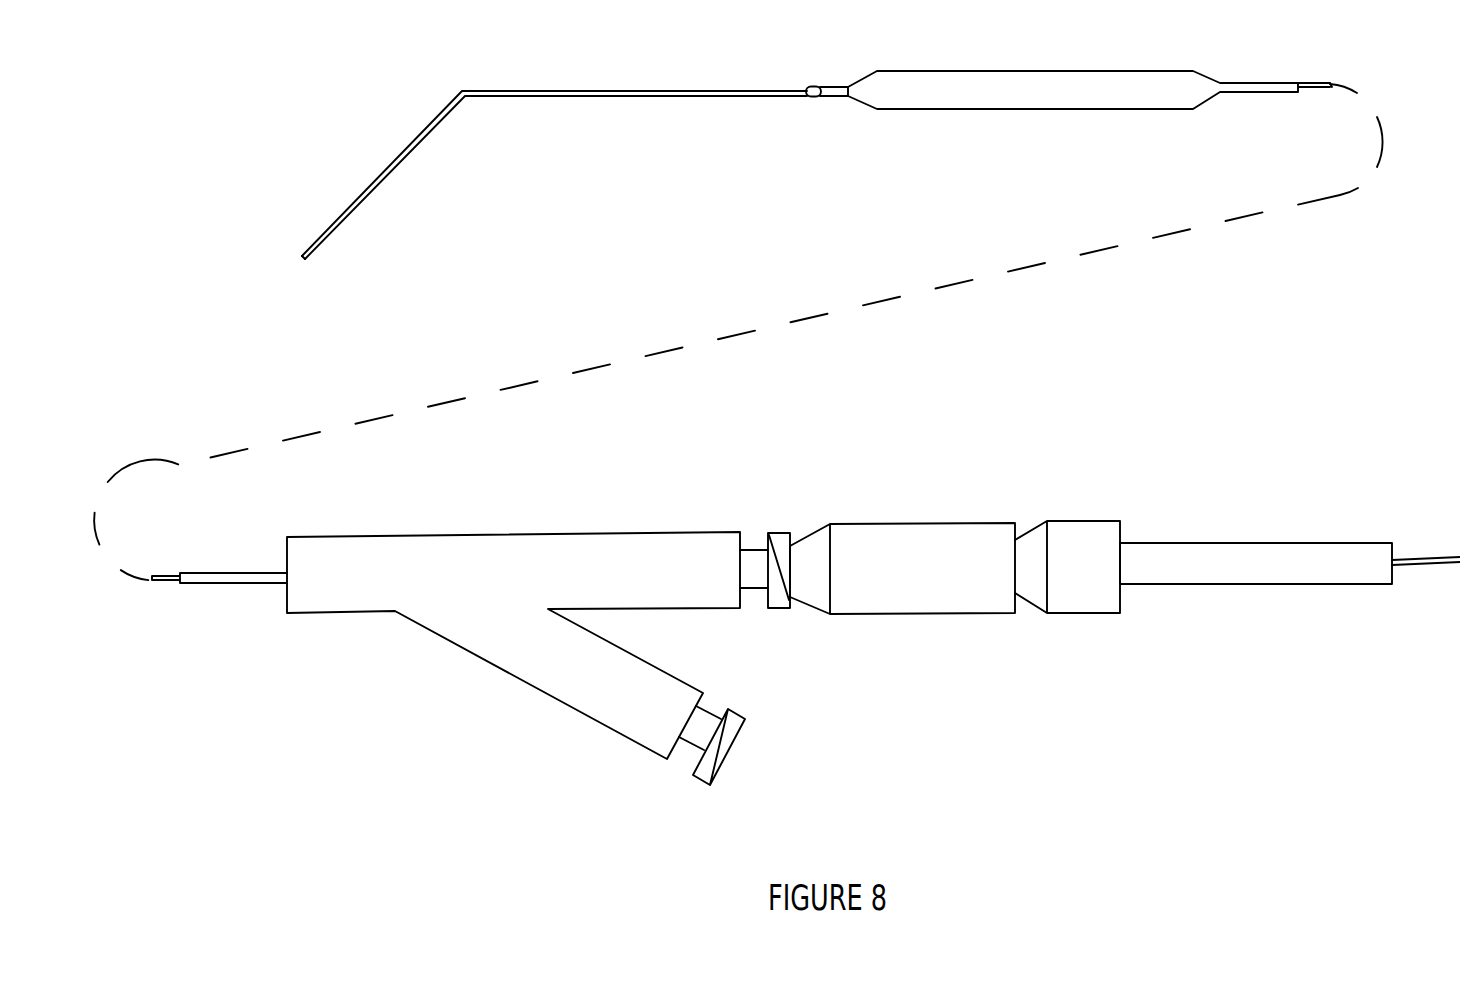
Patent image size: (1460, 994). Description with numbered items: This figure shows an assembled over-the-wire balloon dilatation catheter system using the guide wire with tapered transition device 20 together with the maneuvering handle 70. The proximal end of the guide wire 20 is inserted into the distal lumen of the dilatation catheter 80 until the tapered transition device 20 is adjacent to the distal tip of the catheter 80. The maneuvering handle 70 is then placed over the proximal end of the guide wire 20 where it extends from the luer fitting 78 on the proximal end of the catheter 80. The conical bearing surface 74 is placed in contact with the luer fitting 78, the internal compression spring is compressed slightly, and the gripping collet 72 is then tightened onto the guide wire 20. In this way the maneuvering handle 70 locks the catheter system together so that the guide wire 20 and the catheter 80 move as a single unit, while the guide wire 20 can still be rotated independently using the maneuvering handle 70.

The guide wire with tapered transition device 20 is at (639, 90).
The dilatation catheter 80 is at (840, 86).
The maneuvering handle 70 is at (839, 648).
The luer fitting 78 is at (778, 533).
The conical bearing surface 74 is at (815, 608).
The gripping collet 72 is at (1070, 613).